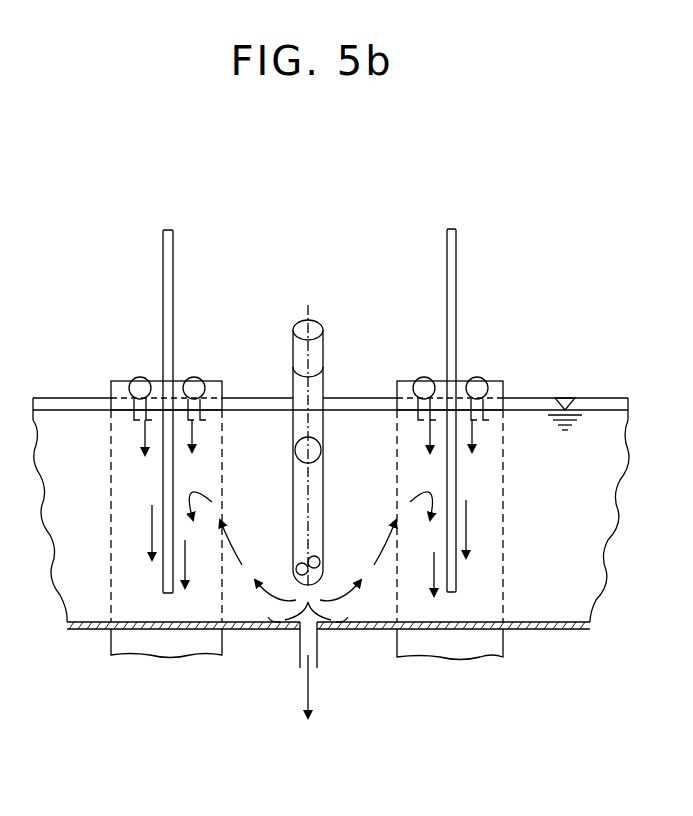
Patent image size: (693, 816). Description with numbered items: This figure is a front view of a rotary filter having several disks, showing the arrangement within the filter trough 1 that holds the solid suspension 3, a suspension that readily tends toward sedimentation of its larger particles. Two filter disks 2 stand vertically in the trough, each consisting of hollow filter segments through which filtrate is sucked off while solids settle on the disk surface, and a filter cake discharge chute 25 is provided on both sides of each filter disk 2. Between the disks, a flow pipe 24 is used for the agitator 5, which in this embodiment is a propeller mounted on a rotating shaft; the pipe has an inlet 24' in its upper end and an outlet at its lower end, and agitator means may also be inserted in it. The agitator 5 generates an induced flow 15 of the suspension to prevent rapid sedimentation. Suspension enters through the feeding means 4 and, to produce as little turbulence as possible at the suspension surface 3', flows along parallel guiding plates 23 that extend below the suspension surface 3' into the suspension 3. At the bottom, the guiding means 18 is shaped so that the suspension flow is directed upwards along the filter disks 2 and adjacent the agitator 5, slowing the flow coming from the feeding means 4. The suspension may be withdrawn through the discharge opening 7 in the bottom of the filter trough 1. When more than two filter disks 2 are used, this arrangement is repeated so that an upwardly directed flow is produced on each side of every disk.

The filter trough 1 is at (375, 630).
The filter disk 2 is at (166, 258).
The solid suspension 3 is at (354, 510).
The suspension surface 3' is at (333, 355).
The feeding means 4 is at (135, 380).
The agitator 5 is at (318, 378).
The discharge opening 7 is at (310, 648).
The induced flow 15 is at (385, 549).
The guiding means 18 is at (305, 637).
The guiding plates 23 is at (153, 383).
The flow pipe 24 is at (281, 525).
The inlet 24' is at (349, 381).
The filter cake discharge chute 25 is at (140, 648).